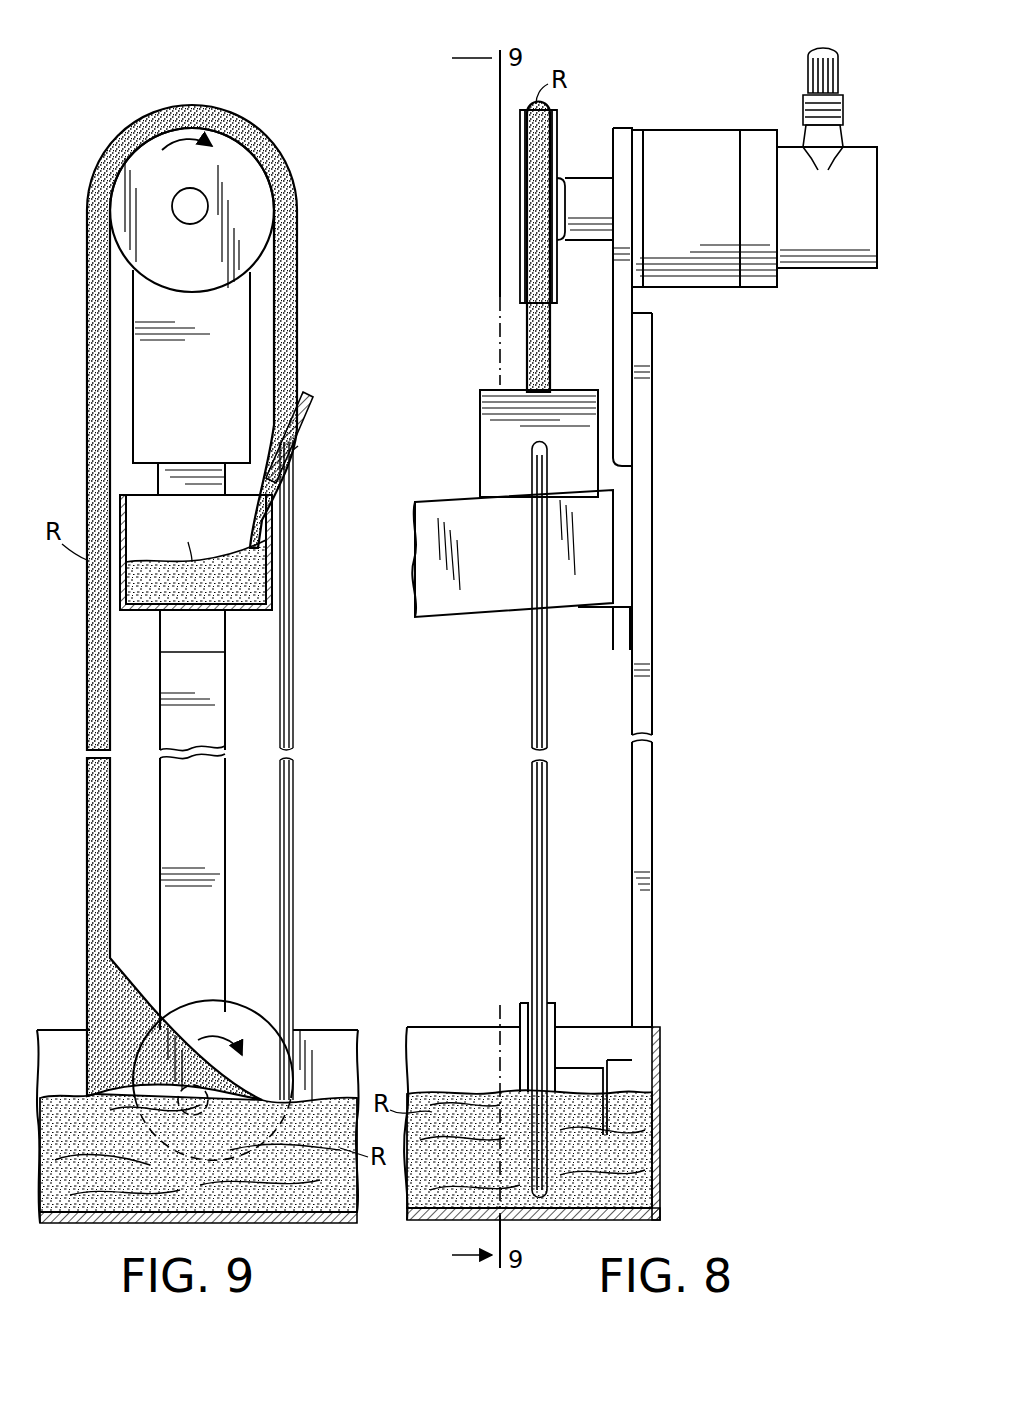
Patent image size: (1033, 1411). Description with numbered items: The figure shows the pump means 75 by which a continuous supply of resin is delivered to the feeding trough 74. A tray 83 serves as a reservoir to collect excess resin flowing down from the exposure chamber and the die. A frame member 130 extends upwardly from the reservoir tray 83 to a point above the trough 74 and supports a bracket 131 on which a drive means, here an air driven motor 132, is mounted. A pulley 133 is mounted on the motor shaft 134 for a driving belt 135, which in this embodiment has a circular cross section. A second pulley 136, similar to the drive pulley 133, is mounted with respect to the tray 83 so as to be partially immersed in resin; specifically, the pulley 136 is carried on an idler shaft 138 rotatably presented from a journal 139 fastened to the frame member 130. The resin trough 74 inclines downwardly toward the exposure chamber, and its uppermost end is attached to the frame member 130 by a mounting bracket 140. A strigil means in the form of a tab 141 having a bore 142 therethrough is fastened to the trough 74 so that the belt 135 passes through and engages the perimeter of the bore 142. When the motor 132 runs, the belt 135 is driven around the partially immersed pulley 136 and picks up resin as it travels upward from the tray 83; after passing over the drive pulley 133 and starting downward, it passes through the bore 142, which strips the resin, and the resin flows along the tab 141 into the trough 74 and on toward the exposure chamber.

In FIG. 9, the pump means 75 is at (265, 103).
In FIG. 8, the pump means 75 is at (492, 148).
In FIG. 9, the pulley 133 is at (258, 170).
In FIG. 8, the pulley 133 is at (558, 125).
In FIG. 9, the motor shaft 134 is at (190, 224).
In FIG. 9, the bracket 131 is at (207, 395).
In FIG. 8, the bracket 131 is at (622, 320).
In FIG. 8, the air driven motor 132 is at (702, 266).
In FIG. 9, the tab 141 is at (306, 408).
In FIG. 8, the tab 141 is at (490, 416).
In FIG. 9, the bore 142 is at (295, 452).
In FIG. 8, the bore 142 is at (532, 448).
In FIG. 9, the feeding trough 74 is at (247, 617).
In FIG. 8, the feeding trough 74 is at (485, 610).
In FIG. 8, the mounting bracket 140 is at (626, 620).
In FIG. 9, the frame member 130 is at (210, 811).
In FIG. 8, the frame member 130 is at (650, 797).
In FIG. 9, the driving belt 135 is at (296, 822).
In FIG. 8, the driving belt 135 is at (530, 772).
In FIG. 9, the second pulley 136 is at (200, 1018).
In FIG. 8, the second pulley 136 is at (524, 1008).
In FIG. 9, the idler shaft 138 is at (190, 1065).
In FIG. 8, the journal 139 is at (615, 1060).
In FIG. 9, the tray 83 is at (298, 1218).
In FIG. 8, the tray 83 is at (660, 1085).